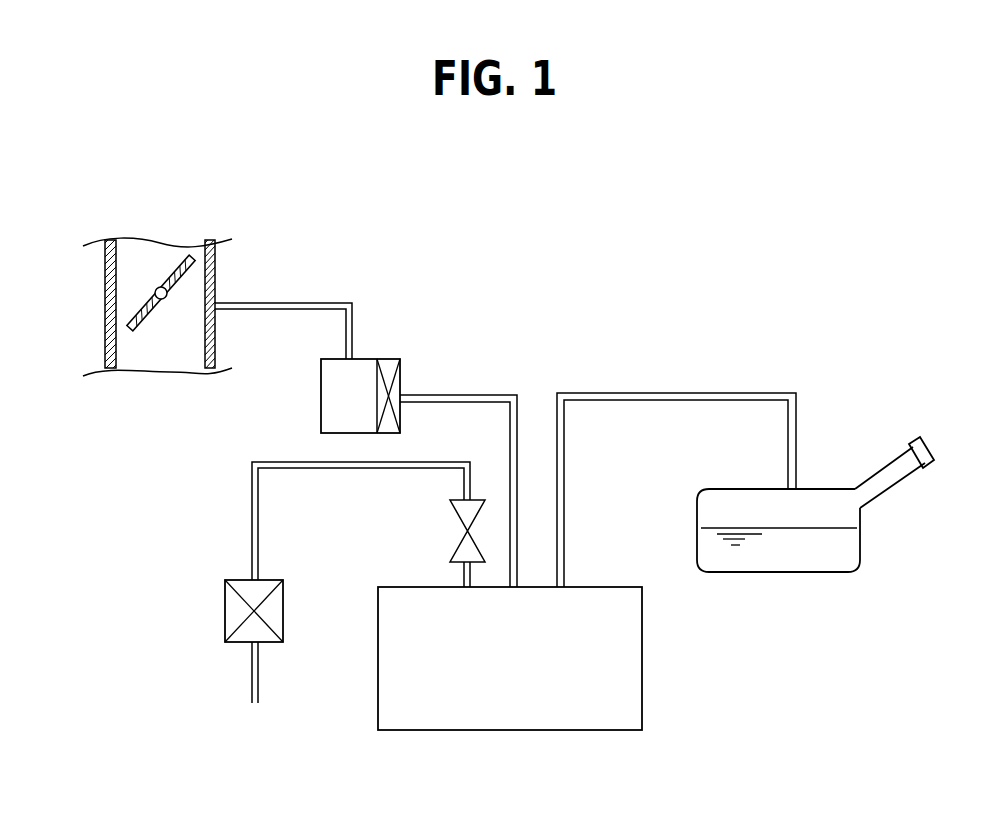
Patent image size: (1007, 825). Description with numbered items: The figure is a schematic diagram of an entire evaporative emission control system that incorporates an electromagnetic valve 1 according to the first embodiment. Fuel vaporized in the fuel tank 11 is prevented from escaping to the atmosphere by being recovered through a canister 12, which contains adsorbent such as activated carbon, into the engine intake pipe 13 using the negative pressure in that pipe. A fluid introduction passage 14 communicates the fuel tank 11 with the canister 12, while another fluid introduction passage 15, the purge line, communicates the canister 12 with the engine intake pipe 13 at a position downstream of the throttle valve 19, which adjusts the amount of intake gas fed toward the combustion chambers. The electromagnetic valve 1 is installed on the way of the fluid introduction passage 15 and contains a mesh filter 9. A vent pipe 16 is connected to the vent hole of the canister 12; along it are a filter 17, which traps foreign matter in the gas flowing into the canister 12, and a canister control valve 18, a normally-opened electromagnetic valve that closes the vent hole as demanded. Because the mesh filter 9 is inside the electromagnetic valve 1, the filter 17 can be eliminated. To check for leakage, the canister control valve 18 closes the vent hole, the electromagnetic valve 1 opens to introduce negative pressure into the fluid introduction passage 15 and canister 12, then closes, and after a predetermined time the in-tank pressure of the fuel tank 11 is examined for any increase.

The electromagnetic valve 1 is at (321, 400).
The mesh filter 9 is at (385, 365).
The fuel tank 11 is at (789, 575).
The canister 12 is at (632, 656).
The engine intake pipe 13 is at (215, 253).
The fluid introduction passage 14 is at (640, 393).
The fluid introduction passage (purge line) 15 is at (462, 395).
The vent pipe 16 is at (252, 490).
The filter 17 is at (235, 610).
The canister control valve 18 is at (465, 514).
The throttle valve 19 is at (140, 315).